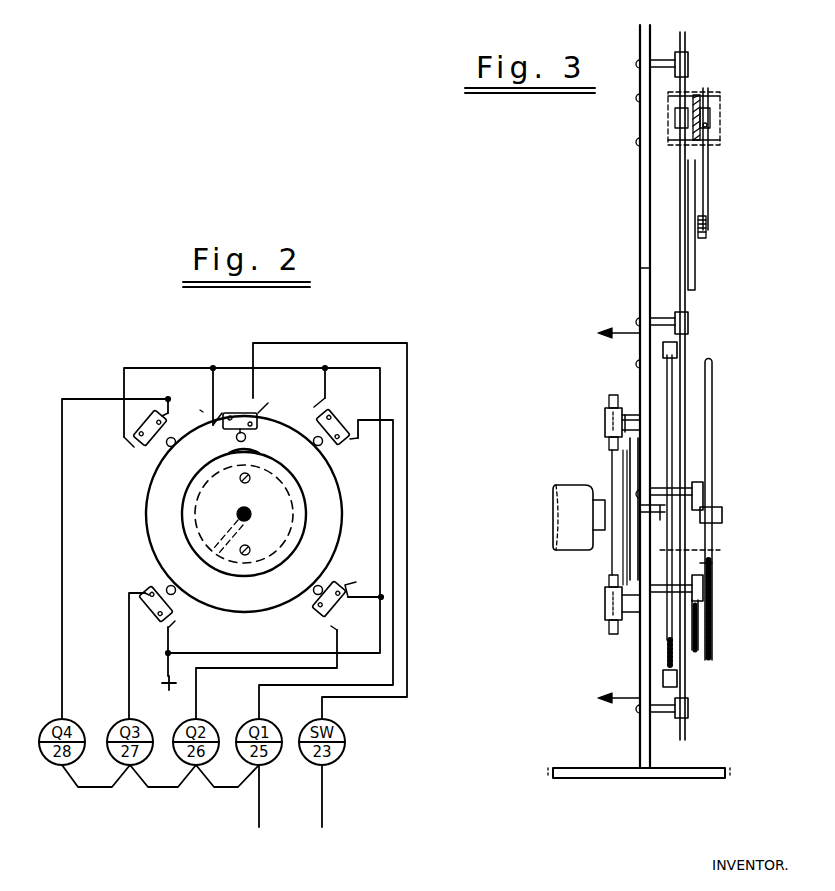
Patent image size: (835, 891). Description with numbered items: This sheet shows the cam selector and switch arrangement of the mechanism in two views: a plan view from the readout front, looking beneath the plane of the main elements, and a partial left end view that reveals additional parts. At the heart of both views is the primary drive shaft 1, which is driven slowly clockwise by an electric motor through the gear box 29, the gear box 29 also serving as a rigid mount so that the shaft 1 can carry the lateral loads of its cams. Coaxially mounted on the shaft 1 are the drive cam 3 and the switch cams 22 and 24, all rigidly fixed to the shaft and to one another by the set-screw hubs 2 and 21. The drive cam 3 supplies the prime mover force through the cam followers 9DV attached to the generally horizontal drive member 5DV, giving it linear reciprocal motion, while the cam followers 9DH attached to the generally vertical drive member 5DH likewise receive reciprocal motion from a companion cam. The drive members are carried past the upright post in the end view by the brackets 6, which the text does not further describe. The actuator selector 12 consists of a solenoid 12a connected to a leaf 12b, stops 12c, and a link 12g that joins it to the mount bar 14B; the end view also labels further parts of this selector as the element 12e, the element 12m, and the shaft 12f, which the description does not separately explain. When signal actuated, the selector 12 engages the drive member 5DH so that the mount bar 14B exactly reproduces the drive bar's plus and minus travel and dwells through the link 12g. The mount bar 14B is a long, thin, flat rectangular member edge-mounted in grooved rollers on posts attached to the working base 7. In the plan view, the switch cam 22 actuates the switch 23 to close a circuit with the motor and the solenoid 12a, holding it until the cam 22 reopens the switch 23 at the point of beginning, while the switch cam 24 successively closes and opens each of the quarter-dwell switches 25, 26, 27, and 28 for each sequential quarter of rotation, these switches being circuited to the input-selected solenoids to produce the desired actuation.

In FIG. 2, the primary drive shaft 1 is at (252, 512).
In FIG. 3, the primary drive shaft 1 is at (660, 518).
In FIG. 3, the set-screw hub 2 is at (733, 563).
In FIG. 3, the drive cam 3 is at (714, 644).
In FIG. 3, the drive member 5DH is at (686, 304).
In FIG. 3, the drive member 5DV is at (700, 616).
In FIG. 3, the bearing bracket 6 is at (690, 64).
In FIG. 3, the working base 7 is at (650, 230).
In FIG. 3, the cam follower 9DH is at (680, 348).
In FIG. 3, the cam follower 9DV is at (722, 516).
In FIG. 3, the actuator selector 12 is at (769, 104).
In FIG. 3, the solenoid 12a is at (724, 102).
In FIG. 3, the leaf 12b is at (699, 96).
In FIG. 3, the stops 12c is at (660, 130).
In FIG. 3, the clutch plate 12e is at (710, 117).
In FIG. 3, the clutch pin 12m is at (710, 125).
In FIG. 3, the clutch shaft 12f is at (708, 192).
In FIG. 3, the link 12g is at (700, 238).
In FIG. 3, the mount bar 14B is at (696, 268).
In FIG. 2, the set-screw hub 21 is at (326, 503).
In FIG. 3, the set-screw hub 21 is at (623, 478).
In FIG. 2, the switch cam 22 is at (185, 512).
In FIG. 3, the switch cam 22 is at (630, 462).
In FIG. 2, the switch 23 is at (236, 412).
In FIG. 3, the switch 23 is at (628, 416).
In FIG. 2, the switch cam 24 is at (200, 410).
In FIG. 3, the switch cam 24 is at (612, 575).
In FIG. 2, the quarter-dwell switch 25 is at (334, 418).
In FIG. 2, the quarter-dwell switch 26 is at (352, 605).
In FIG. 2, the quarter-dwell switch 27 is at (174, 616).
In FIG. 3, the quarter-dwell switch 27 is at (605, 612).
In FIG. 2, the quarter-dwell switch 28 is at (146, 446).
In FIG. 3, the quarter-dwell switch 28 is at (605, 425).
In FIG. 3, the gear box 29 is at (570, 484).